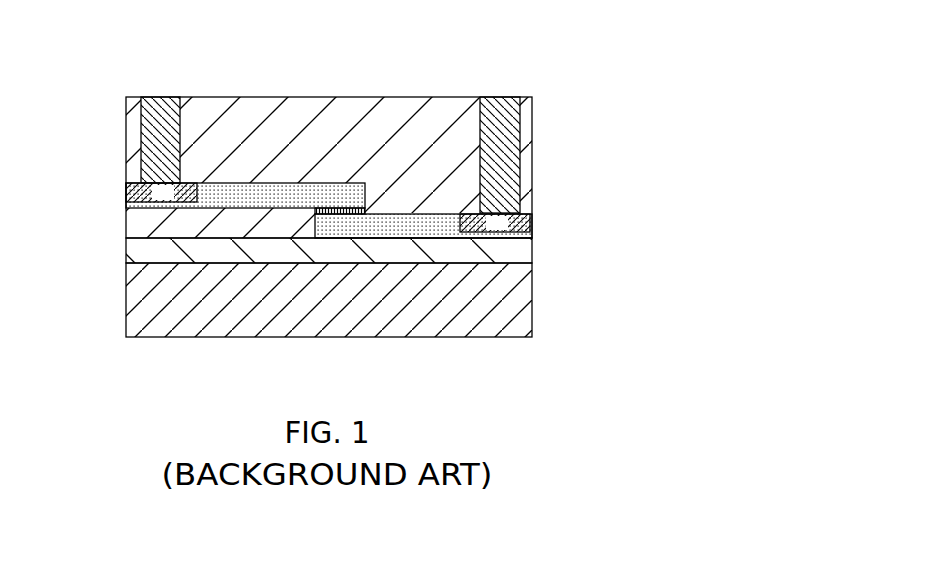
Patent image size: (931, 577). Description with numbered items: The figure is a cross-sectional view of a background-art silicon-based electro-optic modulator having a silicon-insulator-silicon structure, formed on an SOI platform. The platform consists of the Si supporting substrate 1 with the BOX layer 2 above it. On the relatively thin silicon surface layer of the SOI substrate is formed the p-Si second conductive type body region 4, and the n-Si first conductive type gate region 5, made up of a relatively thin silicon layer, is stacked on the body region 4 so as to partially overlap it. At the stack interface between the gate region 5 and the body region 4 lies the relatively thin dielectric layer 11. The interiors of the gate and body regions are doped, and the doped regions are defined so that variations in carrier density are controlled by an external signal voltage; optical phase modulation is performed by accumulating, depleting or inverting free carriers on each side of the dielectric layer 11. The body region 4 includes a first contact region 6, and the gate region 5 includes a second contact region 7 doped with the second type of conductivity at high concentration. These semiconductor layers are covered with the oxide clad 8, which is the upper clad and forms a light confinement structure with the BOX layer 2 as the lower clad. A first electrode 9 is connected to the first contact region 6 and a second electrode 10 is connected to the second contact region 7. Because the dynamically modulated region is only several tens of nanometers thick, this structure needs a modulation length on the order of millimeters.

The Si supporting substrate 1 is at (517, 313).
The BOX layer 2 is at (510, 250).
The p-Si second conductive type body region 4 is at (460, 211).
The n-Si first conductive type gate region 5 is at (222, 192).
The first contact region 6 is at (518, 227).
The second contact region 7 is at (140, 191).
The oxide clad 8 is at (377, 123).
The first electrode 9 is at (495, 110).
The second electrode 10 is at (152, 107).
The dielectric layer 11 is at (313, 212).